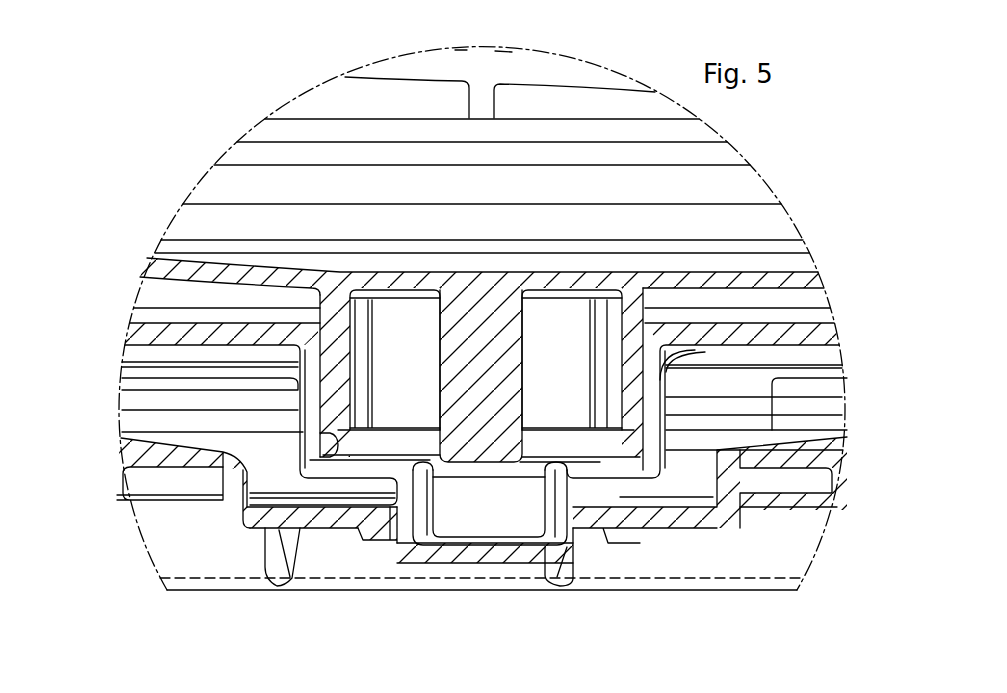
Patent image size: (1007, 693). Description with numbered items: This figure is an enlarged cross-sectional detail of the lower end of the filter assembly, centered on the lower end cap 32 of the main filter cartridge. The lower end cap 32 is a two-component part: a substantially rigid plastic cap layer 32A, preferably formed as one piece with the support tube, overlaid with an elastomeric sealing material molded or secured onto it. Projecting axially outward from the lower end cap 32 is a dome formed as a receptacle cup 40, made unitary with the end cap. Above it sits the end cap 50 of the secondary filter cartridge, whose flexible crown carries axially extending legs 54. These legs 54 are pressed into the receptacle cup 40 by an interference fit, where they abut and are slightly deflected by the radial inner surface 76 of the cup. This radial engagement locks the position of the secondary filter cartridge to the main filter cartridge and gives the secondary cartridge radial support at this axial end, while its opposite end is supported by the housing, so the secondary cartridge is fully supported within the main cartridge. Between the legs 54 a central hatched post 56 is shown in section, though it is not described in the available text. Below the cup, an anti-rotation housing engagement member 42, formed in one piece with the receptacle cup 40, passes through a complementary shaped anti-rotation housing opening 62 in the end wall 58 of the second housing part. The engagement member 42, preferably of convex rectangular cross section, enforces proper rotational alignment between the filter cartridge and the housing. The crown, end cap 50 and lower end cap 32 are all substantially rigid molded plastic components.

The lower end cap 32 is at (145, 332).
The substantially rigid plastic cap layer 32A is at (797, 337).
The receptacle cup 40 is at (322, 437).
The anti-rotation housing engagement member 42 is at (395, 528).
The end cap 50 is at (708, 273).
The legs 54 is at (327, 332).
The post 56 is at (502, 385).
The end wall 58 is at (650, 527).
The anti-rotation housing opening 62 is at (385, 532).
The radial inner surface 76 is at (328, 448).